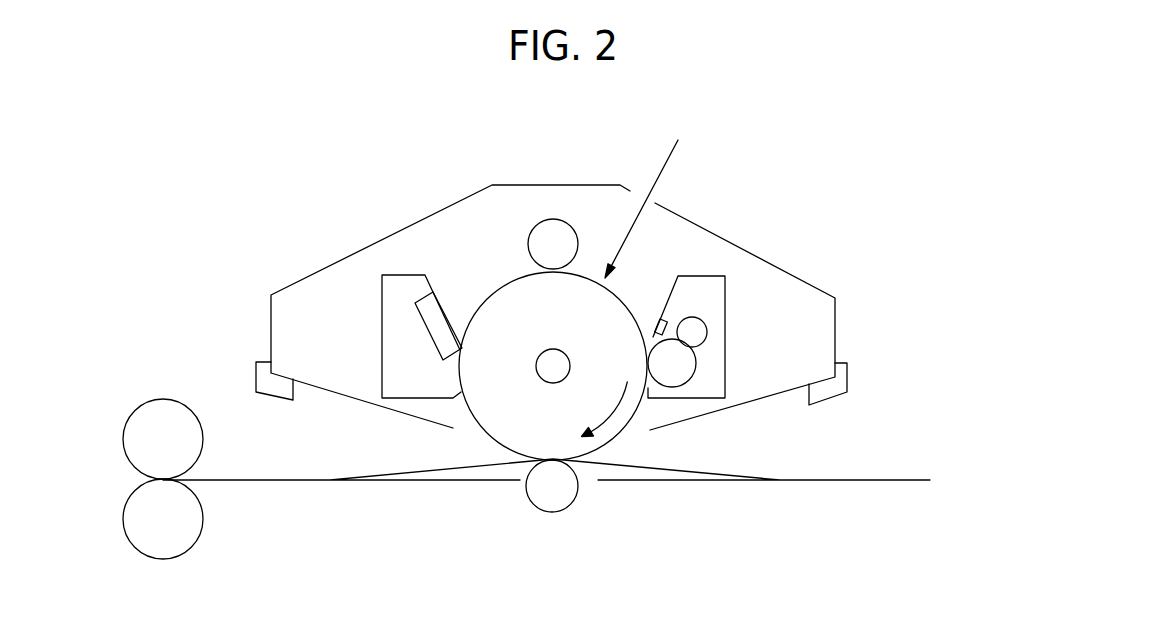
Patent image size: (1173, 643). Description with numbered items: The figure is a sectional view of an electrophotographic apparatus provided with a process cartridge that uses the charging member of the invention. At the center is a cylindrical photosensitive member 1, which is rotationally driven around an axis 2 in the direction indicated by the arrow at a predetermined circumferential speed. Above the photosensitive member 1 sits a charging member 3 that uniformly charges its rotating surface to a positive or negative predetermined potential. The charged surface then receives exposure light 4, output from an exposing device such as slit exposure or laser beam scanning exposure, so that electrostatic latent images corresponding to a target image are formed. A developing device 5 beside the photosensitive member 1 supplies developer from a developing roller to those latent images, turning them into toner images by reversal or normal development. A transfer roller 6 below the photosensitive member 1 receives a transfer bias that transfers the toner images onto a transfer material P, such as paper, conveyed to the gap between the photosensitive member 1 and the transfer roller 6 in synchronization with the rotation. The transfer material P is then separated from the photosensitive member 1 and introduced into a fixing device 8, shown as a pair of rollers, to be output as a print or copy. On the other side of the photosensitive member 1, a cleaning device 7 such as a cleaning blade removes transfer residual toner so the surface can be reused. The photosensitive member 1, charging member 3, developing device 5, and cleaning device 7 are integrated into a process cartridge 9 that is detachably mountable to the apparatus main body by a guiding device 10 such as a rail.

The photosensitive member 1 is at (515, 280).
The axis 2 is at (548, 349).
The charging member 3 is at (556, 220).
The exposure light 4 is at (674, 150).
The developing device 5 is at (697, 276).
The transfer roller 6 is at (552, 512).
The cleaning device 7 is at (398, 275).
The fixing device 8 is at (163, 399).
The process cartridge 9 is at (758, 258).
The guiding device 10 is at (277, 398).
The transfer material P is at (715, 472).